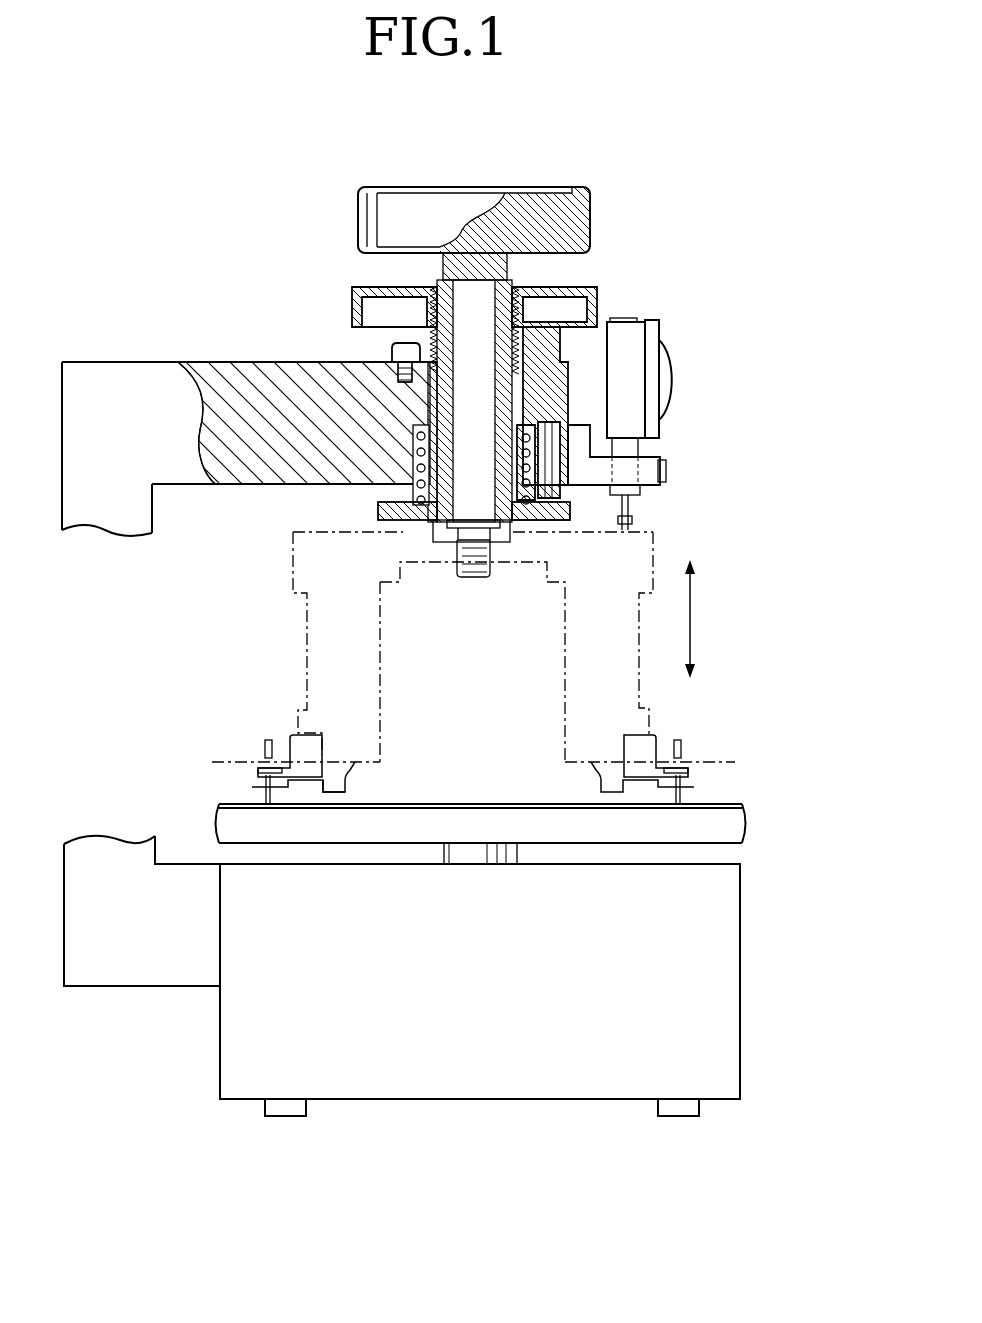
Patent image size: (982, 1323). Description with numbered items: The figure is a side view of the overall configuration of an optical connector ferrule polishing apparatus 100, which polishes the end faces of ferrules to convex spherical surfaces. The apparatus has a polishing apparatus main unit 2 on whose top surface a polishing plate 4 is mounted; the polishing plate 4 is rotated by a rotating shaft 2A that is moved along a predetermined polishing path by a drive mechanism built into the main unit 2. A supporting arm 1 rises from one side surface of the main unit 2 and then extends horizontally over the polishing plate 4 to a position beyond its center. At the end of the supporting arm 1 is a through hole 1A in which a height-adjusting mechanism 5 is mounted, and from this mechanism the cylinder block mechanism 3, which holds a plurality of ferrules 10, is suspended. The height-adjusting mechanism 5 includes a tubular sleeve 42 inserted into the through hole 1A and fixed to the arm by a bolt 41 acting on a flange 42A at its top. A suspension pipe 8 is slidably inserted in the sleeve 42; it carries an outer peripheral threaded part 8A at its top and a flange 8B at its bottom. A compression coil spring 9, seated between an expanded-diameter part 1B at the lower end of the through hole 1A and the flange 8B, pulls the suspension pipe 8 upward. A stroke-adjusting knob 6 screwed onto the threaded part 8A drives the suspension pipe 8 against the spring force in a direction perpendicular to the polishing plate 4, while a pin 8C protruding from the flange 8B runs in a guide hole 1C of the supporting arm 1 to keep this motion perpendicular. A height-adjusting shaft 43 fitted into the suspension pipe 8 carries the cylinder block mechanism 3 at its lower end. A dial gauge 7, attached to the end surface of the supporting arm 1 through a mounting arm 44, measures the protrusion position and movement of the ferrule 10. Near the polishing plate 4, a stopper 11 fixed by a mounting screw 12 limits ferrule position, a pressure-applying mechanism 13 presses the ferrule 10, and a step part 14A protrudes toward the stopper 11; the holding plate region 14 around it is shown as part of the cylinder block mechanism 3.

The supporting arm 1 is at (232, 362).
The through hole 1A is at (420, 395).
The expanded-diameter part 1B is at (418, 467).
The guide hole 1C is at (608, 443).
The polishing apparatus main unit 2 is at (728, 920).
The rotating shaft 2A is at (508, 851).
The cylinder block mechanism 3 is at (637, 620).
The polishing plate 4 is at (731, 824).
The height-adjusting mechanism 5 is at (612, 230).
The stroke-adjusting knob 6 is at (570, 300).
The dial gauge 7 is at (648, 337).
The suspension pipe 8 is at (540, 395).
The outer peripheral threaded part 8A is at (522, 332).
The flange 8B is at (377, 505).
The pin 8C is at (527, 503).
The compression coil spring 9 is at (528, 535).
The ferrule 10 is at (267, 740).
The stopper 11 is at (250, 780).
The mounting screw 12 is at (340, 792).
The pressure-applying mechanism 13 is at (307, 623).
The positioning member 14 is at (235, 722).
The step part 14A is at (262, 755).
The bolt 41 is at (425, 340).
The sleeve 42 is at (420, 422).
The flange 42A is at (390, 352).
The height-adjusting shaft 43 is at (483, 293).
The mounting arm 44 is at (652, 485).
The polishing apparatus 100 is at (755, 416).